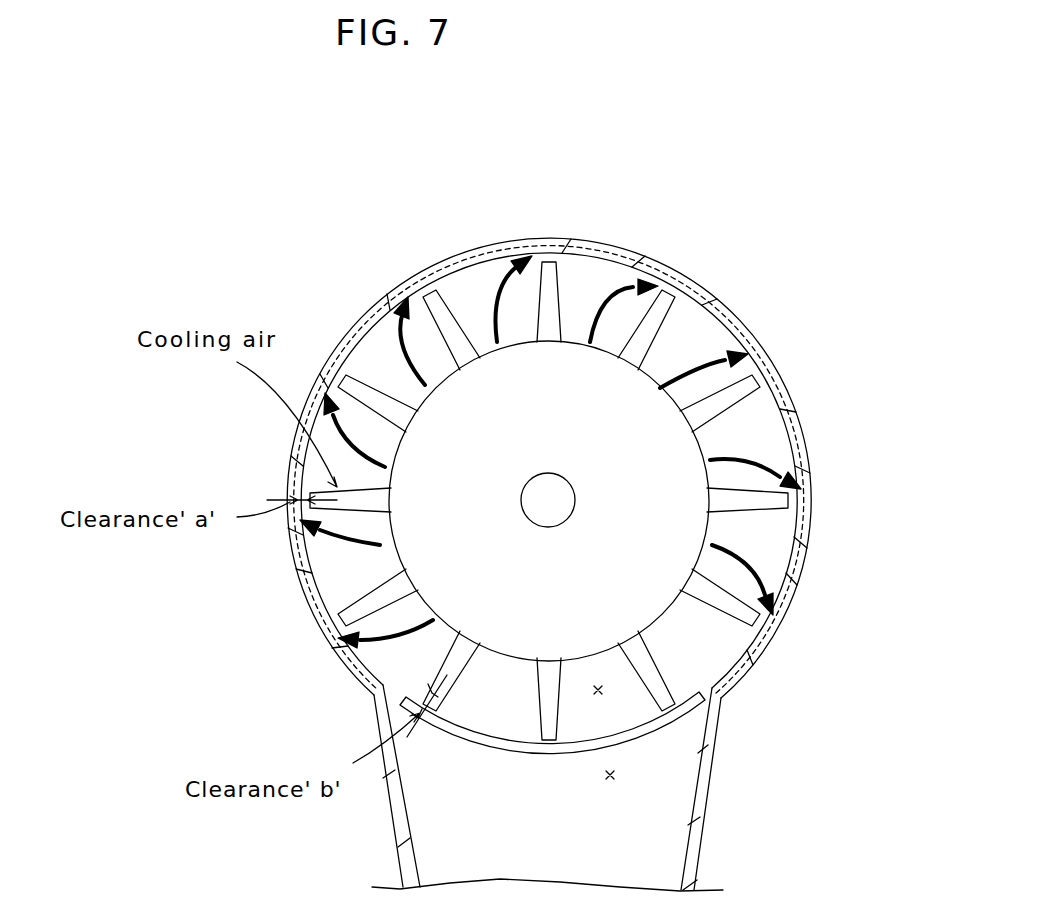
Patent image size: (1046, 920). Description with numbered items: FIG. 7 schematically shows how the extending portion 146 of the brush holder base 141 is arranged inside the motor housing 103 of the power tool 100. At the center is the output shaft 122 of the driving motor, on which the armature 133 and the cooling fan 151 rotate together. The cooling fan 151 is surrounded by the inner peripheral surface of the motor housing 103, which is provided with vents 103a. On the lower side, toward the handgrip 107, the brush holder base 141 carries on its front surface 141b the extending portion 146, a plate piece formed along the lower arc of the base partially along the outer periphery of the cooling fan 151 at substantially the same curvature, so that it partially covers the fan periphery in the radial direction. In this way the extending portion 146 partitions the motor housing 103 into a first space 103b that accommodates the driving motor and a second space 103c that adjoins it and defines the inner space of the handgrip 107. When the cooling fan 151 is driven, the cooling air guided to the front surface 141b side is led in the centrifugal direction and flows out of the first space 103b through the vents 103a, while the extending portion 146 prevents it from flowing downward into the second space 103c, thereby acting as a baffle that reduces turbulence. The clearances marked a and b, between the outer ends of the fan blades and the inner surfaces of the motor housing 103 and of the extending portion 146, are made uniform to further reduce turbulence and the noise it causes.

The centrifugal blower 100 is at (616, 174).
The motor housing 103 is at (683, 268).
The vents 103a is at (385, 303).
The first space 103b is at (598, 690).
The second space 103c is at (610, 775).
The handgrip 107 is at (709, 853).
The output shaft 122 is at (548, 498).
The armature 133 is at (716, 448).
The brush holder base 141 is at (807, 553).
The front surface 141b is at (770, 533).
The extending portion 146 is at (470, 737).
The cooling fan 151 is at (328, 452).